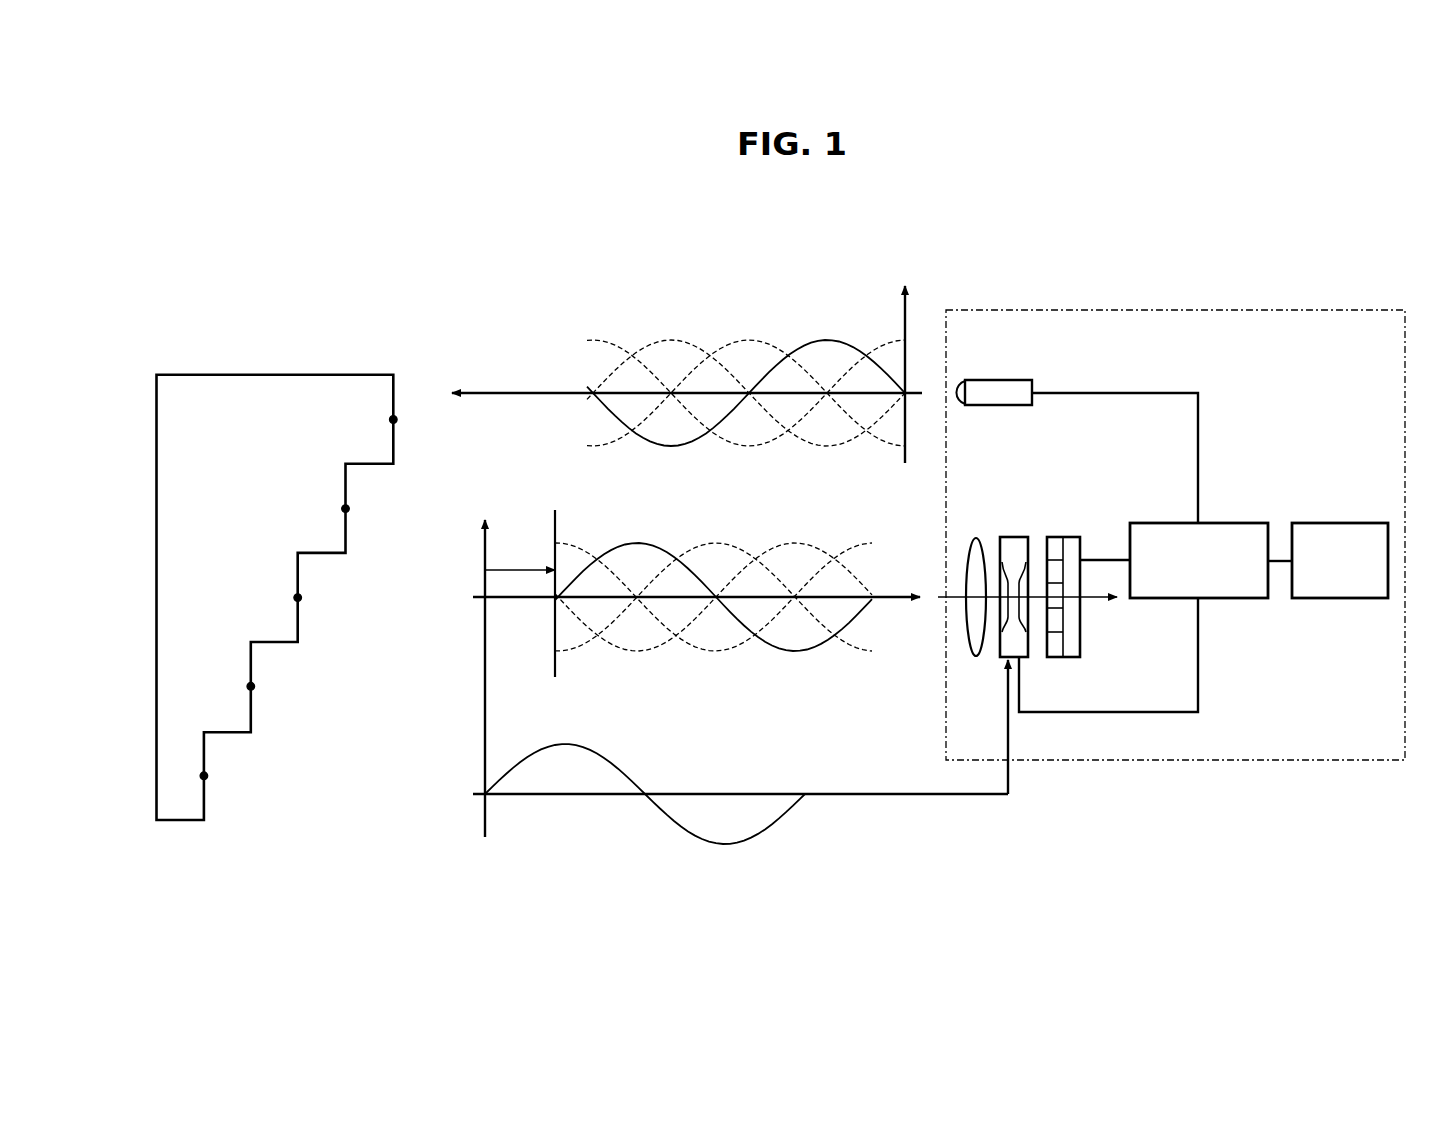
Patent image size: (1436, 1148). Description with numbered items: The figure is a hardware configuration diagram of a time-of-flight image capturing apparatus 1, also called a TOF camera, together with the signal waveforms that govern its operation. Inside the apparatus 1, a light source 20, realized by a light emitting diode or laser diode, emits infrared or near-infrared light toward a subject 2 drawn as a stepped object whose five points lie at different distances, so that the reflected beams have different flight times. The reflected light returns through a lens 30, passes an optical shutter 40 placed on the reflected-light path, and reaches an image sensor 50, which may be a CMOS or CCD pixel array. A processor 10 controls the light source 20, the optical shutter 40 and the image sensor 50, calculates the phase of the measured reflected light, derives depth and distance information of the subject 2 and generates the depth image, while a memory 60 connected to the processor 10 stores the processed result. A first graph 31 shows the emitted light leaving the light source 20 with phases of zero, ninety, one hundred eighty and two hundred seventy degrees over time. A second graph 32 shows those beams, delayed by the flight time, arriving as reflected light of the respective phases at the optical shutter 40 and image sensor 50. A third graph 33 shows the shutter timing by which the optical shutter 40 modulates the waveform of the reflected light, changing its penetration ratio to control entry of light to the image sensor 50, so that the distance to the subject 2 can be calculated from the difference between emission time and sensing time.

The TOF image capturing apparatus 1 is at (1272, 312).
The subject 2 is at (278, 373).
The processor 10 is at (1240, 523).
The light source 20 is at (998, 380).
The lens 30 is at (975, 540).
The first graph 31 is at (567, 367).
The second graph 32 is at (588, 523).
The third graph 33 is at (593, 815).
The optical shutter 40 is at (1015, 531).
The image sensor 50 is at (1068, 531).
The memory 60 is at (1340, 523).